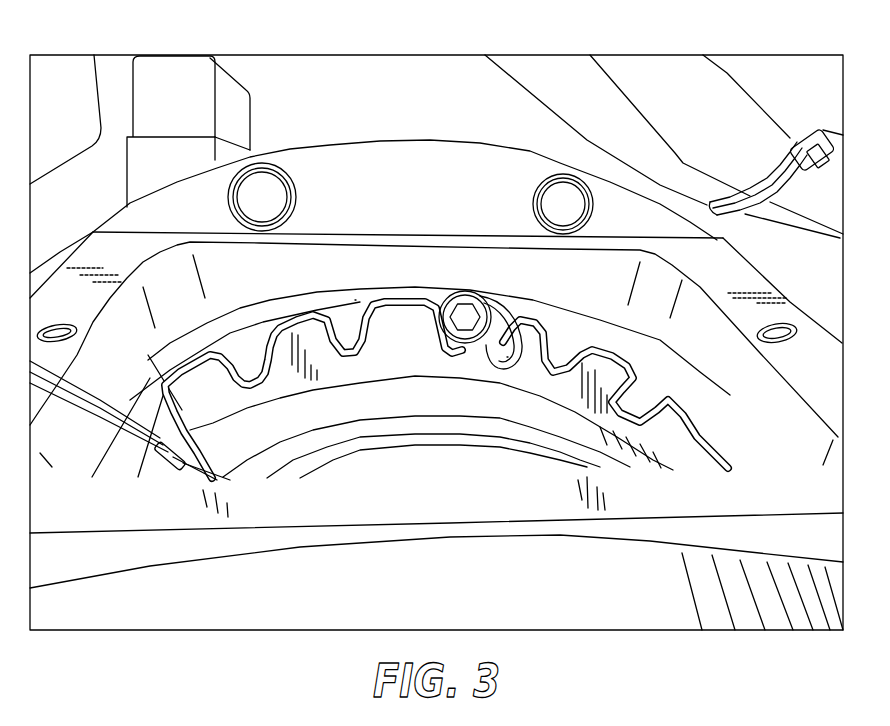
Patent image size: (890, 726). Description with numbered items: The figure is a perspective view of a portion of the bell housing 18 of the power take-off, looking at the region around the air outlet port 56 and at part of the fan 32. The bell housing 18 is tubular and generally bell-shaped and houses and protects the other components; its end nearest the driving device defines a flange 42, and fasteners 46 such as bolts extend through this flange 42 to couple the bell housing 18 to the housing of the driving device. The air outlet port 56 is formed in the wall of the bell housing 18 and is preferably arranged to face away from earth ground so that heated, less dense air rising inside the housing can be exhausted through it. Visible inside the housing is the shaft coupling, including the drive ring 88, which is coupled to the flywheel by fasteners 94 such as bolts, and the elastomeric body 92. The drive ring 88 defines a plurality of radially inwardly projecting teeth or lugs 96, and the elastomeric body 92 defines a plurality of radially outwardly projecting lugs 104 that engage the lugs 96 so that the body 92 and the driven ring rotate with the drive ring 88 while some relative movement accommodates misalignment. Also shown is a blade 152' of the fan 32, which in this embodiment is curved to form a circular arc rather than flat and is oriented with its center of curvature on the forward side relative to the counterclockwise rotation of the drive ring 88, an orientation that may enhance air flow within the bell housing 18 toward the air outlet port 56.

The bell housing 18 is at (436, 600).
The fan 32 is at (558, 287).
The flange 42 is at (436, 215).
The fasteners 46 is at (410, 165).
The air outlet port 56 is at (434, 354).
The drive ring 88 is at (431, 322).
The elastomeric body 92 is at (411, 366).
The fasteners 94 is at (480, 264).
The lugs 96 is at (382, 238).
The lugs 104 is at (446, 370).
The blade 152' is at (618, 342).